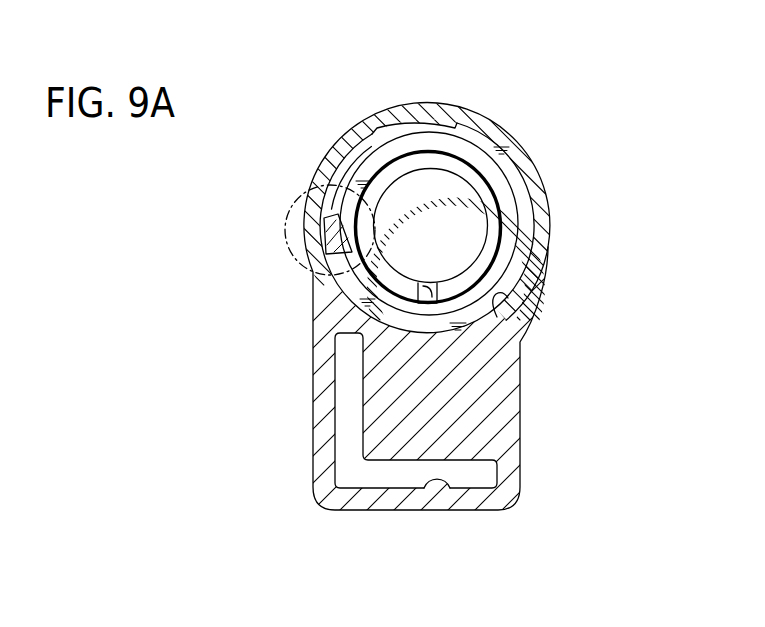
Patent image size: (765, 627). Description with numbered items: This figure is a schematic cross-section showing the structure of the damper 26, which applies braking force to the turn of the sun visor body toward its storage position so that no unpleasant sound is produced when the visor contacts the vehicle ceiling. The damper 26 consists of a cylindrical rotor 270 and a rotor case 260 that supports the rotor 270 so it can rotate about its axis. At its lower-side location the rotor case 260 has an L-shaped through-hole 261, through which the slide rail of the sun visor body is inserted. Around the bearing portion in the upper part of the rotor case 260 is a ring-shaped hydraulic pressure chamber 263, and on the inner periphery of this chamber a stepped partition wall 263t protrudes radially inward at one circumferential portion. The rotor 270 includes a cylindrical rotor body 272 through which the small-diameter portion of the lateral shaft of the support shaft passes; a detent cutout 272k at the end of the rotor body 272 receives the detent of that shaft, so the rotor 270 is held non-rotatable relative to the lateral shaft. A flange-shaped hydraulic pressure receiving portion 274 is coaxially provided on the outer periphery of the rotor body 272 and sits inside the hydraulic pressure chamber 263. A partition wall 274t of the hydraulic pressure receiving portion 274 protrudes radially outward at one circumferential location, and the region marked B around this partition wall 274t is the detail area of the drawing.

The damper 26 is at (453, 96).
The rotor case 260 is at (500, 396).
The L-shaped through-hole 261 is at (446, 478).
The hydraulic pressure chamber 263 is at (497, 297).
The stepped partition wall 263t is at (403, 122).
The rotor 270 is at (362, 154).
The rotor body 272 is at (485, 192).
The detent cutout 272k is at (398, 315).
The hydraulic pressure receiving portion 274 is at (511, 257).
The partition wall 274t is at (332, 240).
The detail region B is at (288, 203).